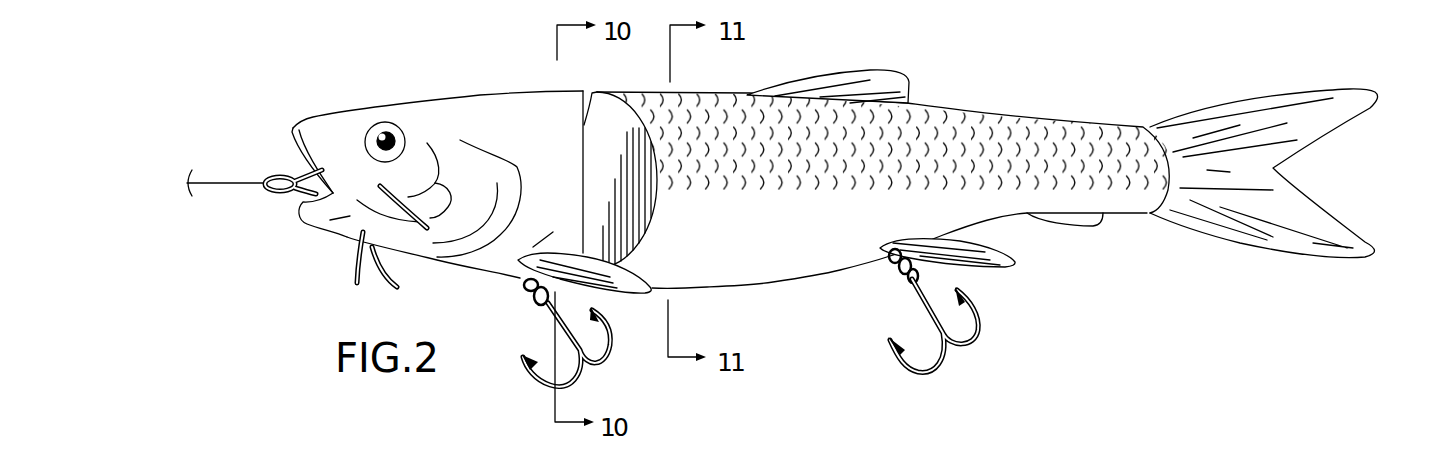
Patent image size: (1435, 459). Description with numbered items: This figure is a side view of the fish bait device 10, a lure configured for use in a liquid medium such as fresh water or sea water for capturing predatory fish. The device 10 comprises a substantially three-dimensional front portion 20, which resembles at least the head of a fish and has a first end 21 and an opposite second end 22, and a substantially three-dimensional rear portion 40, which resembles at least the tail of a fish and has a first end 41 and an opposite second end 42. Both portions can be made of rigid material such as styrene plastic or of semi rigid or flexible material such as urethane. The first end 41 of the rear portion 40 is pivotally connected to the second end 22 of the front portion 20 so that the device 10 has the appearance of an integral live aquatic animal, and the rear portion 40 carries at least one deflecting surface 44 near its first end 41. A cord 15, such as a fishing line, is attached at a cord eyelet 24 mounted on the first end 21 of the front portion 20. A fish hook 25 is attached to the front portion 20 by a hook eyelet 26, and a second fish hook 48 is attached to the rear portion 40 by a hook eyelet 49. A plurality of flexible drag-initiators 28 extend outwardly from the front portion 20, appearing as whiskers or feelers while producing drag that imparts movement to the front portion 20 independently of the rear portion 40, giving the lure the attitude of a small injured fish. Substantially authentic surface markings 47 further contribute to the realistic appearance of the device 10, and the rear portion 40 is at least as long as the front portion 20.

The fish bait device 10 is at (1146, 295).
The cord 15 is at (224, 186).
The front portion 20 is at (430, 90).
The first end 21 is at (302, 117).
The second end 22 is at (567, 85).
The cord eyelet 24 is at (282, 194).
The fish hook 25 is at (613, 335).
The hook eyelet 26 is at (522, 286).
The flexible drag-initiators 28 is at (350, 262).
The rear portion 40 is at (1011, 116).
The first end 41 is at (601, 84).
The second end 42 is at (1298, 90).
The deflecting surface 44 is at (604, 146).
The surface markings 47 is at (838, 181).
The fish hook 48 is at (982, 322).
The hook eyelet 49 is at (889, 262).